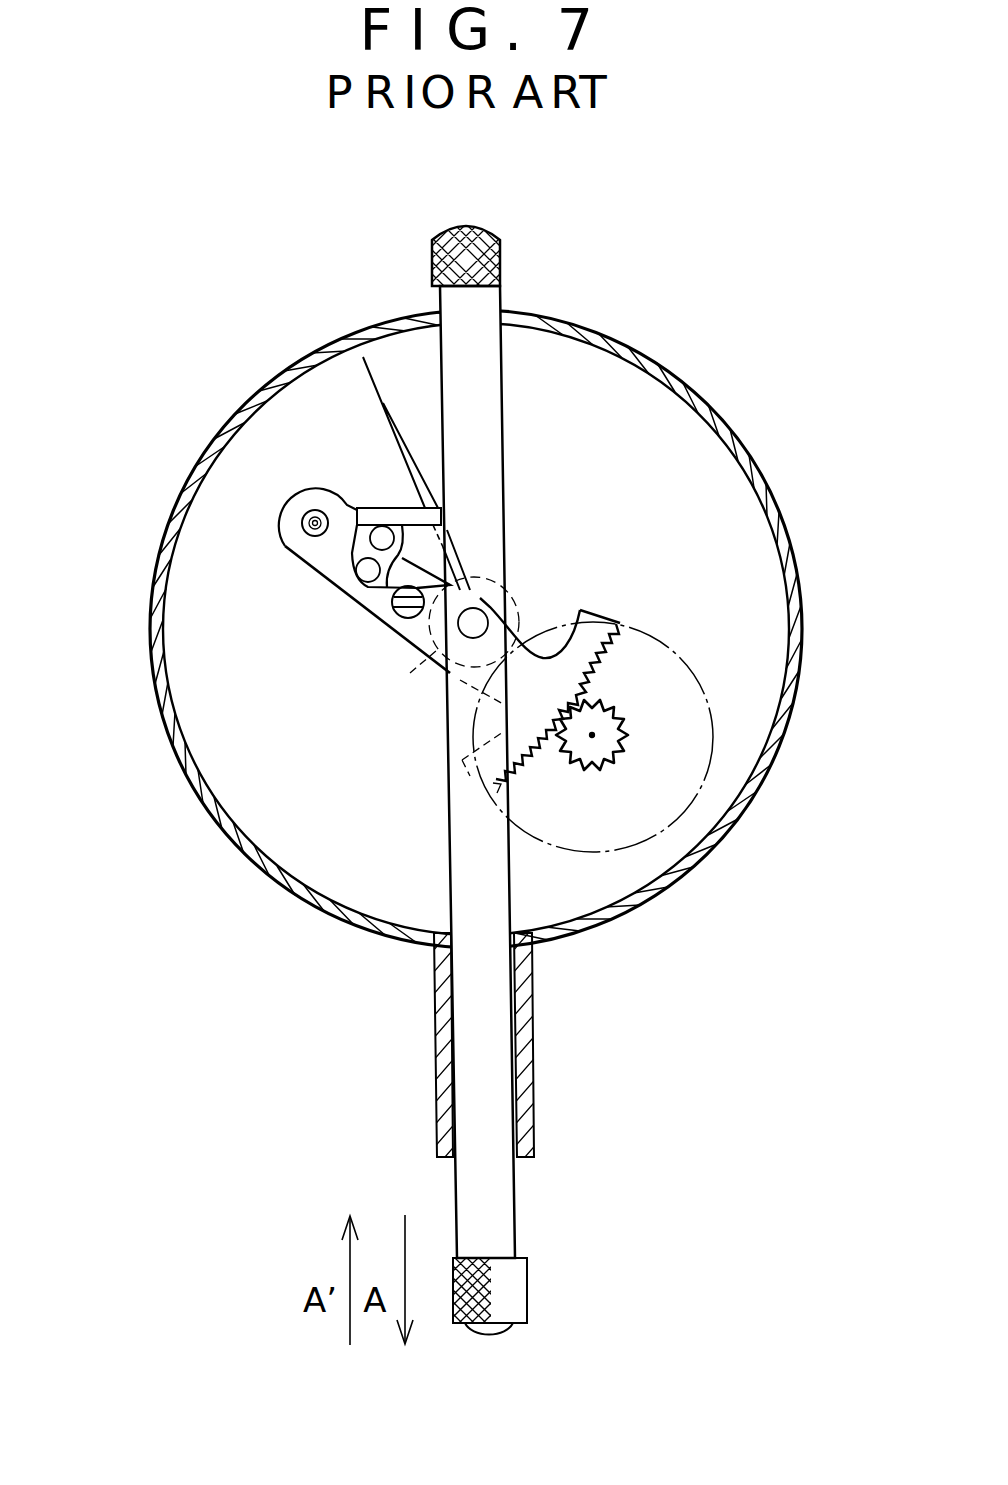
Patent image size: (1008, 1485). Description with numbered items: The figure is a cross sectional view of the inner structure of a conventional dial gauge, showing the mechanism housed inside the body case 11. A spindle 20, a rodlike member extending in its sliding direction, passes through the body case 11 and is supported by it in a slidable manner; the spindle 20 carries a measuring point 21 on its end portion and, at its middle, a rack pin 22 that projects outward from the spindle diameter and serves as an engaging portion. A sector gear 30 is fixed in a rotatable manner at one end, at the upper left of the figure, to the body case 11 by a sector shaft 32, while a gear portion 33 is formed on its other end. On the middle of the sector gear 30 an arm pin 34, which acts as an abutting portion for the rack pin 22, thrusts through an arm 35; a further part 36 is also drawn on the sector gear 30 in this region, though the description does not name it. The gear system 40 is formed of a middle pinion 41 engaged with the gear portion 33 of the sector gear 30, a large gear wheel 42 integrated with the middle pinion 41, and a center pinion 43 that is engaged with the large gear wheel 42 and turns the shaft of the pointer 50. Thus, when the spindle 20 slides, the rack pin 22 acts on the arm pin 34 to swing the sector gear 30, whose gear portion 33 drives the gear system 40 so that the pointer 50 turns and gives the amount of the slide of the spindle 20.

The body case 11 is at (742, 447).
The spindle 20 is at (487, 348).
The measuring point 21 is at (520, 1290).
The rack pin 22 is at (383, 507).
The sector gear 30 is at (254, 582).
The sector shaft 32 is at (303, 522).
The gear portion 33 is at (585, 640).
The arm pin 34 is at (362, 552).
The arm 35 is at (327, 560).
The pawl 36 is at (359, 556).
The gear system 40 is at (682, 792).
The middle pinion 41 is at (600, 743).
The large gear wheel 42 is at (687, 782).
The center pinion 43 is at (408, 612).
The pointer 50 is at (363, 415).